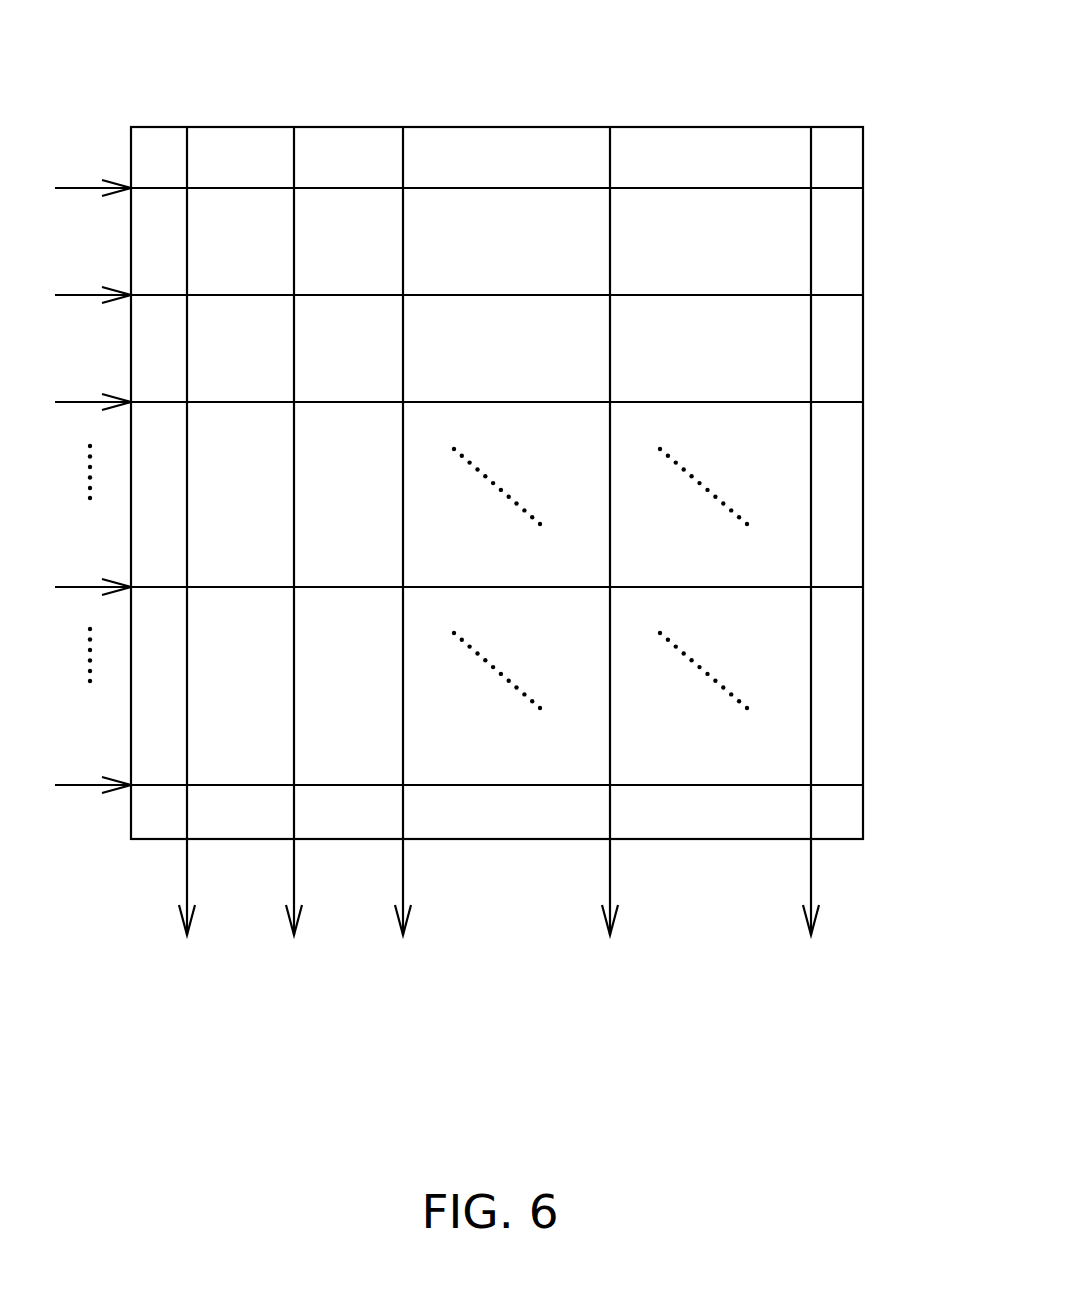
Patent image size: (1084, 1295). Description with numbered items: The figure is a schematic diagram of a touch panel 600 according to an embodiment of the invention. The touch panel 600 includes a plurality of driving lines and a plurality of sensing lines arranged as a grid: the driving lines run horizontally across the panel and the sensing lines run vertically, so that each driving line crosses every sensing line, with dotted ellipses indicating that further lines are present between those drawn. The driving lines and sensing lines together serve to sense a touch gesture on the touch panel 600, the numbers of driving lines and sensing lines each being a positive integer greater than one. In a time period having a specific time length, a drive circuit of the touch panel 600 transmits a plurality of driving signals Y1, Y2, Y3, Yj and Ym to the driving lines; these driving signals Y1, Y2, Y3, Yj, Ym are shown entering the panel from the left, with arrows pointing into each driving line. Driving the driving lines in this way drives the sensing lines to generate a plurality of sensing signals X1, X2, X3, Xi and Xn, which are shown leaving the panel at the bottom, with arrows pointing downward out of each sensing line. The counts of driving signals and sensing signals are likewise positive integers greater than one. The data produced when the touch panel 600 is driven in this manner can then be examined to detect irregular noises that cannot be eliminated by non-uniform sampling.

The touch panel 600 is at (498, 127).
The sensing signal X1 is at (190, 940).
The sensing signal X2 is at (297, 940).
The sensing signal X3 is at (406, 940).
The sensing signal Xi is at (610, 940).
The sensing signal Xn is at (813, 940).
The driving signal Y1 is at (94, 174).
The driving signal Y2 is at (94, 281).
The driving signal Y3 is at (94, 388).
The driving signal Yj is at (94, 573).
The driving signal Ym is at (88, 771).